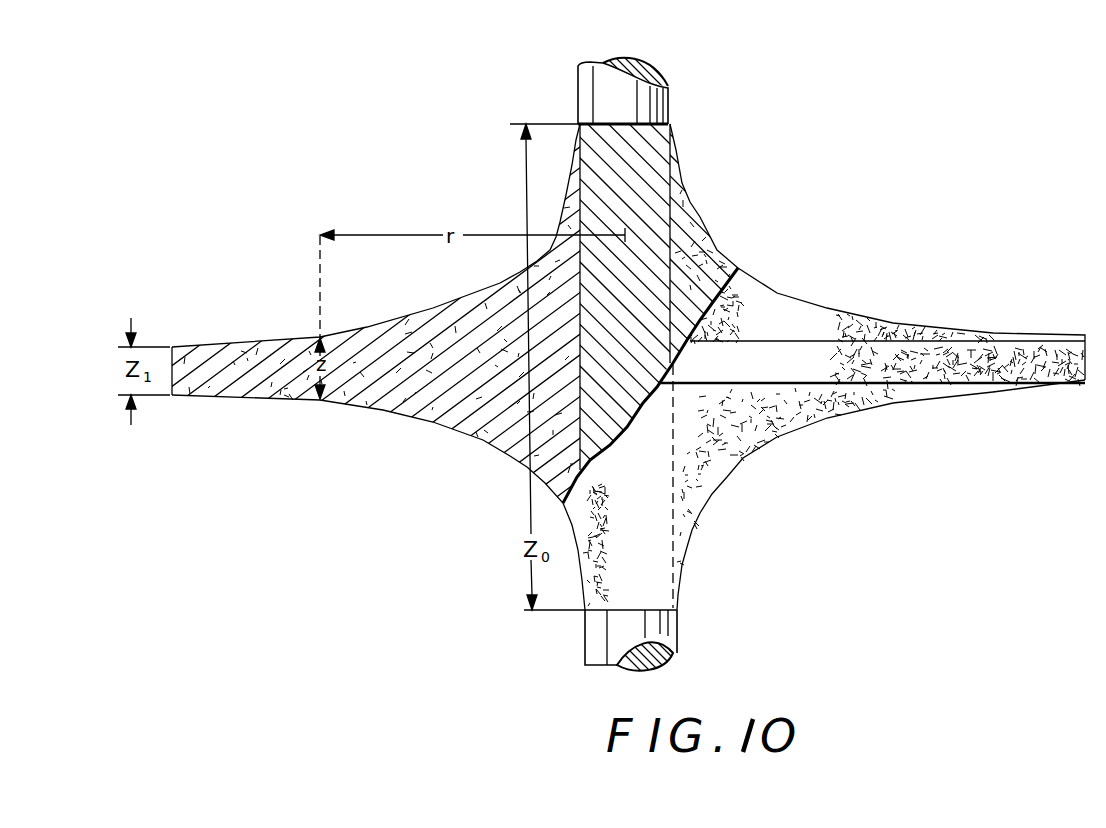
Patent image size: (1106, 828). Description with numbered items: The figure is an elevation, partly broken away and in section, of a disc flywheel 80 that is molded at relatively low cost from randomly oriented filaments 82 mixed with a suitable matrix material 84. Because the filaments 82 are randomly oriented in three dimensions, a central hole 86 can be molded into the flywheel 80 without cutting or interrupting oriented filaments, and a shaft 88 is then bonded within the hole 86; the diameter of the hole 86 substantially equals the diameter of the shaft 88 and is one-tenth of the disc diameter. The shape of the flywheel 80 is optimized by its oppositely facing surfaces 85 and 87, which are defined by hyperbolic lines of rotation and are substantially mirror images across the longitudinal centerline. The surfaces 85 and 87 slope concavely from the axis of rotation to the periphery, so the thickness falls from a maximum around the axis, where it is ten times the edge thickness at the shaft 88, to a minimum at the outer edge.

The disc flywheel 80 is at (836, 285).
The randomly oriented filaments 82 is at (372, 329).
The matrix material 84 is at (690, 214).
The oppositely facing surface 85 is at (923, 329).
The central hole 86 is at (666, 152).
The oppositely facing surface 87 is at (882, 406).
The shaft 88 is at (668, 90).